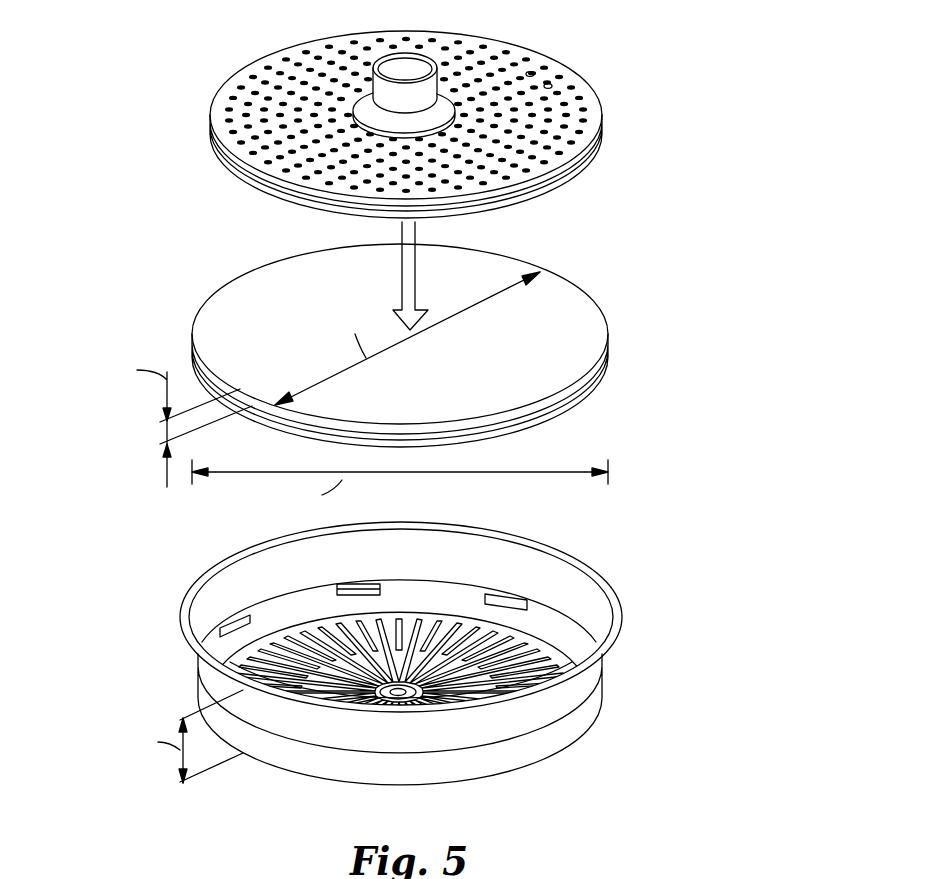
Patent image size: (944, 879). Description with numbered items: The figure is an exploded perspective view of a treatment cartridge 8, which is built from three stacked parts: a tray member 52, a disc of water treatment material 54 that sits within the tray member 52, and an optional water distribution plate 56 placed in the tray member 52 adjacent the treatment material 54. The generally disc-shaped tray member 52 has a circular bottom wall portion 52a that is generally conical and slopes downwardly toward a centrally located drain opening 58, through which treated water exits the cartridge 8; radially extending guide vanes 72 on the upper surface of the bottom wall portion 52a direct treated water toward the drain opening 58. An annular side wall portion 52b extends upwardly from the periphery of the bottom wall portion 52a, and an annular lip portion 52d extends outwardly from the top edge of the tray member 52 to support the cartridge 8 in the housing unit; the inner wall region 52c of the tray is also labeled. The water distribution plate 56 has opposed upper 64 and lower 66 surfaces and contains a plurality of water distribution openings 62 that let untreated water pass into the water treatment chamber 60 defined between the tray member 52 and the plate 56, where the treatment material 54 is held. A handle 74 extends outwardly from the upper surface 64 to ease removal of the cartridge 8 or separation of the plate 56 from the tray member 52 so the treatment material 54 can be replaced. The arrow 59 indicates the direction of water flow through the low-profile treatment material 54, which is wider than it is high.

The treatment cartridge 8 is at (104, 74).
The tray member 52 is at (588, 724).
The bottom wall portion 52a is at (405, 603).
The side wall portion 52b is at (308, 765).
The pan inner wall ledge 52c is at (470, 550).
The annular lip portion 52d is at (190, 606).
The water treatment material 54 is at (578, 306).
The water distribution plate 56 is at (594, 116).
The drain opening 58 is at (395, 705).
The direction of flow of water 59 is at (415, 266).
The water treatment chamber 60 is at (512, 612).
The water distribution openings 62 is at (548, 84).
The upper surface 64 is at (237, 82).
The lower surface 66 is at (238, 170).
The guide vanes 72 is at (317, 617).
The handle 74 is at (397, 60).